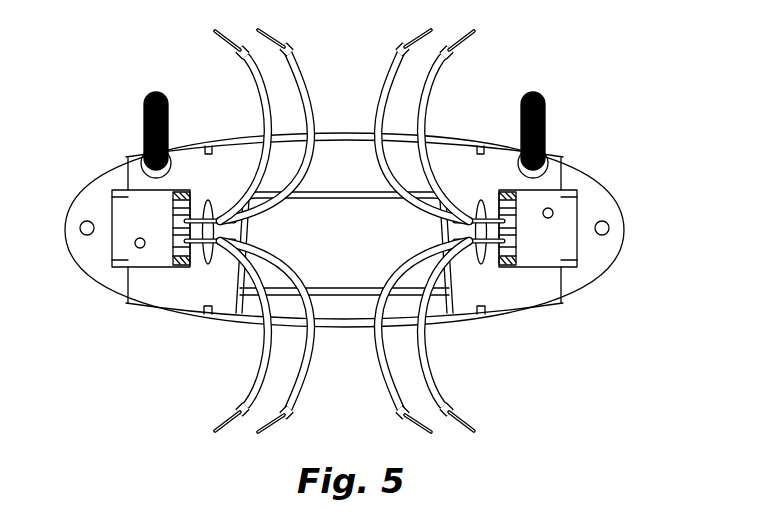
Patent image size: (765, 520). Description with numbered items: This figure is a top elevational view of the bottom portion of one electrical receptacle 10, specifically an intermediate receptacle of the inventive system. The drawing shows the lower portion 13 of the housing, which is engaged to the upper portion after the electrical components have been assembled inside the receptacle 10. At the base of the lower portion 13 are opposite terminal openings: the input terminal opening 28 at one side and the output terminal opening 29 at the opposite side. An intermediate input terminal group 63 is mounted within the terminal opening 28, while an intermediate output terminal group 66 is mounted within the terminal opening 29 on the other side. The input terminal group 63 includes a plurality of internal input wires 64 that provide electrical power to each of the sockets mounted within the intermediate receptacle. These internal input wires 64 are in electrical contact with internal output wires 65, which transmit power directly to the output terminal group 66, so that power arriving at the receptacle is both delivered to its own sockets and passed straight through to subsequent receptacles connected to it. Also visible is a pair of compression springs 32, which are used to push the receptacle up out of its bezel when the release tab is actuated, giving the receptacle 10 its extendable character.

The electrical receptacle 10 is at (342, 124).
The lower portion 13 is at (599, 162).
The input terminal opening 28 is at (176, 205).
The output terminal opening 29 is at (552, 212).
The compression springs 32 is at (142, 128).
The intermediate input terminal group 63 is at (160, 252).
The internal input wires 64 is at (204, 242).
The internal output wires 65 is at (485, 242).
The intermediate output terminal group 66 is at (555, 238).